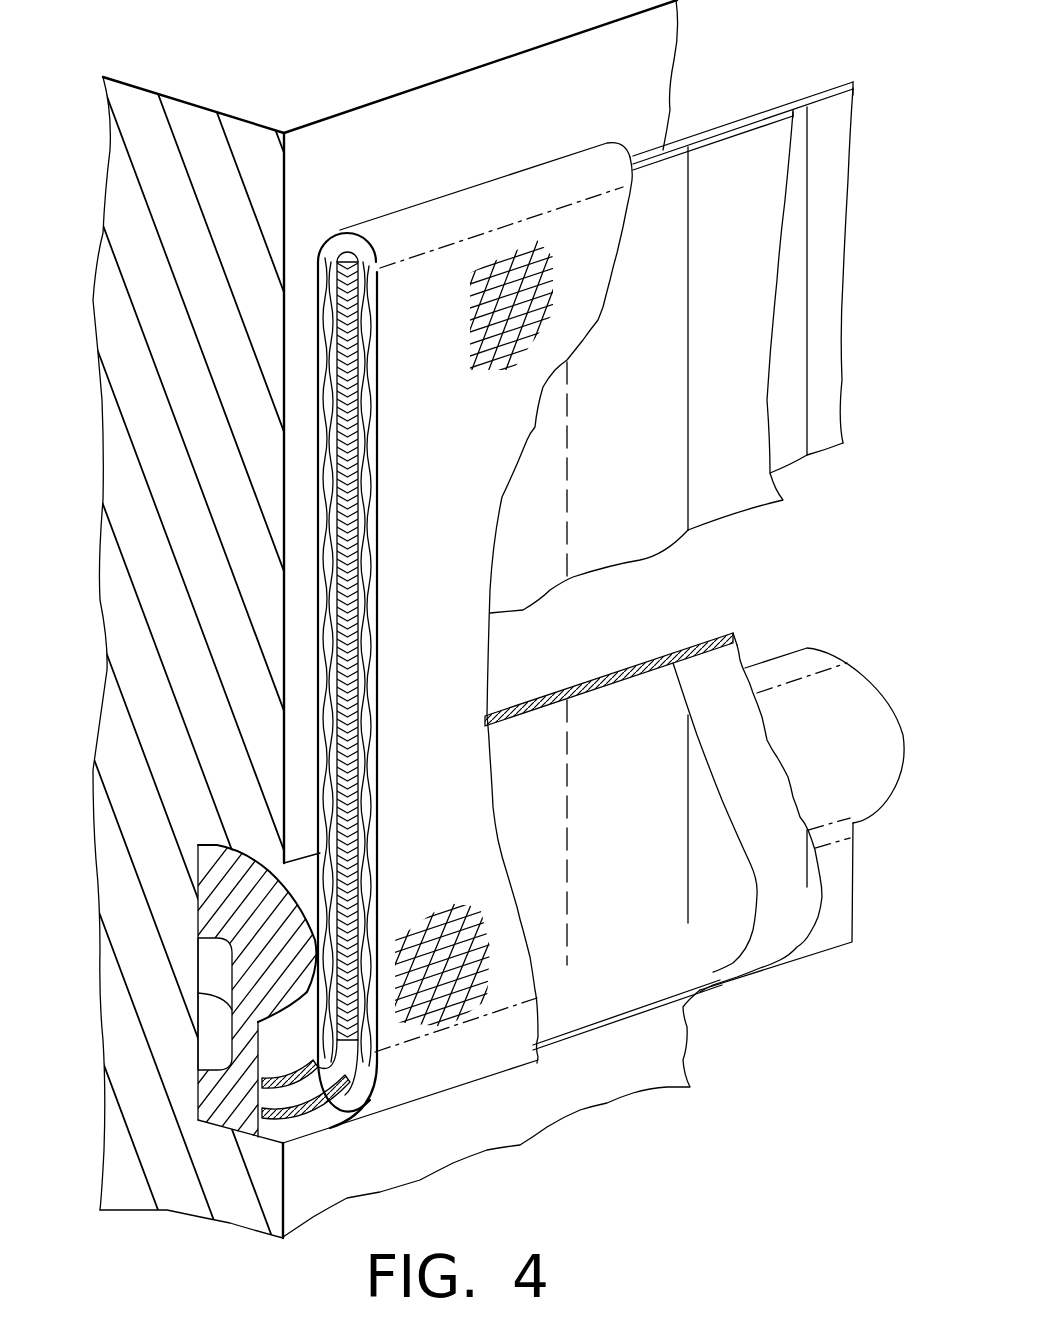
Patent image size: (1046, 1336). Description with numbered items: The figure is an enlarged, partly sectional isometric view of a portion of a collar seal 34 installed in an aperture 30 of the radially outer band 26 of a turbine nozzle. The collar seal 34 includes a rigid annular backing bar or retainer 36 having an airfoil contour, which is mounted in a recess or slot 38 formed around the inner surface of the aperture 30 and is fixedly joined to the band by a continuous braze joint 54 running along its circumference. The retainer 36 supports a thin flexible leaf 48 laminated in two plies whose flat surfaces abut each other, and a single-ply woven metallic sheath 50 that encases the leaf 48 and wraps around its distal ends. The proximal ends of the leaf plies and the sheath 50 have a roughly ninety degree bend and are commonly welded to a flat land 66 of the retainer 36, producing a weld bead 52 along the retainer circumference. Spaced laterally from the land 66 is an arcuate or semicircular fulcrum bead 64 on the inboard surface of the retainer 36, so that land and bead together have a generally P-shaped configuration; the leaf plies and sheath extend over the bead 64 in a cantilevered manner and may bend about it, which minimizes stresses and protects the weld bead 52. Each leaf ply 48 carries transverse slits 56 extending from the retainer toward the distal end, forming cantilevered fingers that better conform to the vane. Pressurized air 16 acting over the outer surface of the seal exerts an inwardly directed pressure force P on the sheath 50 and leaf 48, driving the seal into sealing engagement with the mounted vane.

The pressurized air 16 is at (280, 78).
The outer band 26 is at (170, 432).
The aperture 30 is at (640, 63).
The collar seal 34 is at (318, 487).
The retainer 36 is at (823, 652).
The slot 38 is at (210, 1045).
The leaf 48 is at (636, 415).
The sheath 50 is at (443, 815).
The weld bead 52 is at (277, 1070).
The braze joint 54 is at (198, 912).
The transverse slits 56 is at (688, 262).
The fulcrum bead 64 is at (288, 945).
The flat land 66 is at (830, 920).
The pressure force P is at (318, 375).